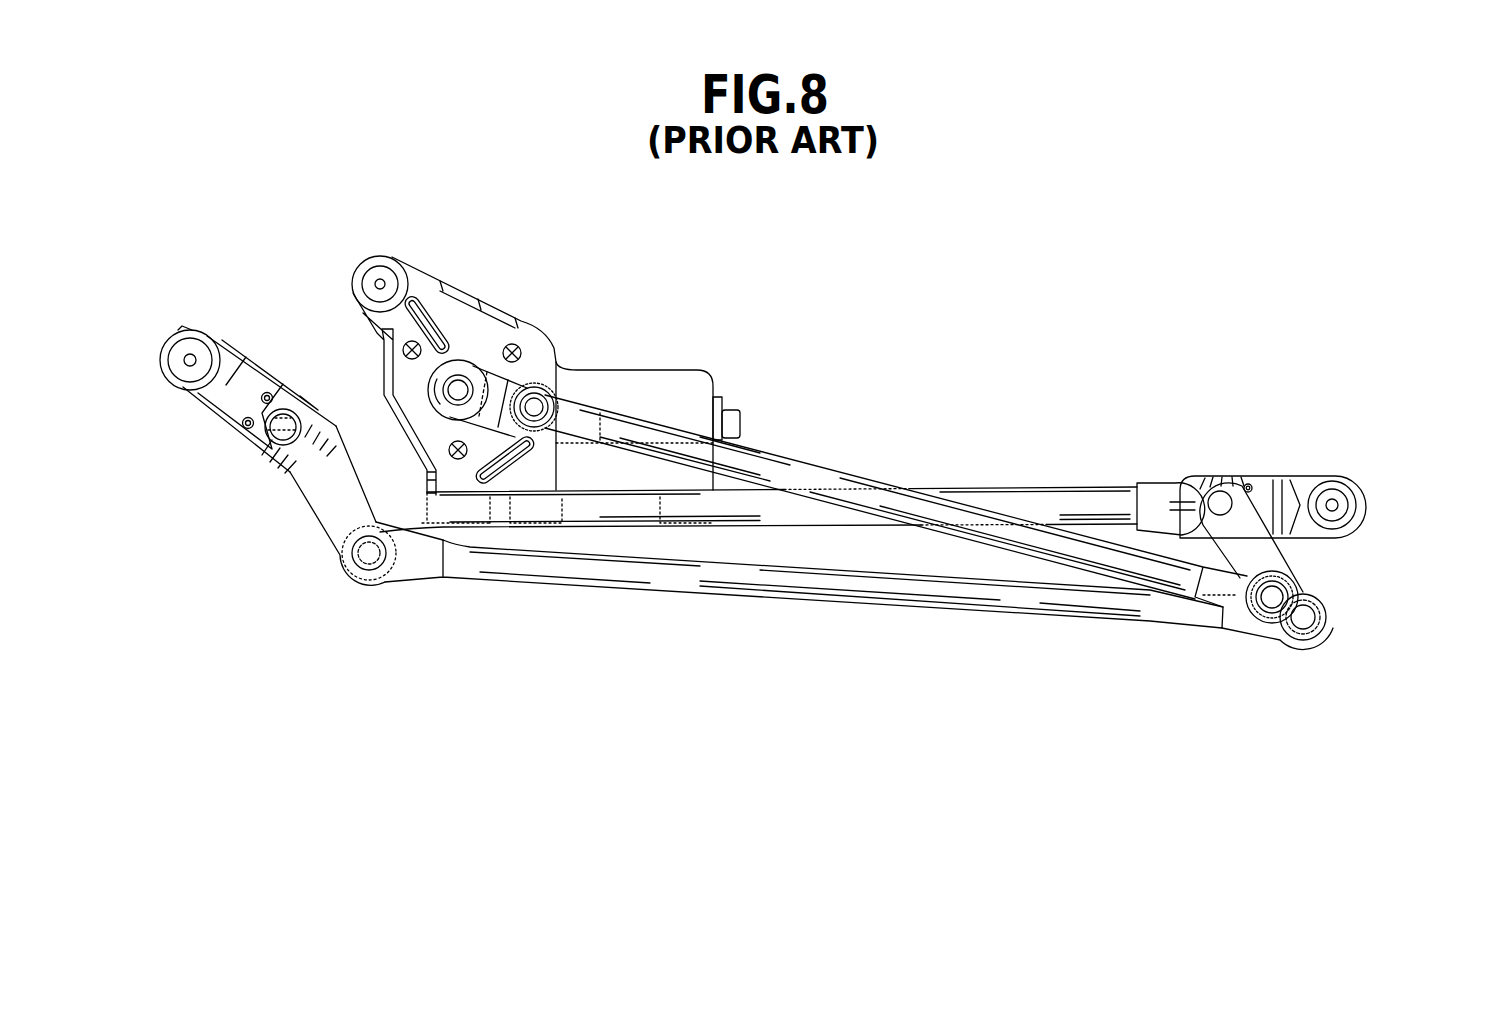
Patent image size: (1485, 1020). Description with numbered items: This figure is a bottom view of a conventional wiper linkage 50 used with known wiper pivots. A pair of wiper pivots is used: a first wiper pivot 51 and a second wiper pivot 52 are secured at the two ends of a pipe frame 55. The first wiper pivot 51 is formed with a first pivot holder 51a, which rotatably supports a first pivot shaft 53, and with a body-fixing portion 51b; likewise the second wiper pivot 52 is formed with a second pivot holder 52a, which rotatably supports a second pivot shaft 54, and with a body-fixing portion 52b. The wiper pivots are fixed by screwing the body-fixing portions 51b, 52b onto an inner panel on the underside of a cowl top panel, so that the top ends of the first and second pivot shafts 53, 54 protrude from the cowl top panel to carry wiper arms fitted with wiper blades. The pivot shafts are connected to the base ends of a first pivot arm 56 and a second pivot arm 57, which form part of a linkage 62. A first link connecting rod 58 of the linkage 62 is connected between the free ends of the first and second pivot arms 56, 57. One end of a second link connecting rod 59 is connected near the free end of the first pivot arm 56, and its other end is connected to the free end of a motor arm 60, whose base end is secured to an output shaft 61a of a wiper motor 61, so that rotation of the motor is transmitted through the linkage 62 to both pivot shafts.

The wiper linkage 50 is at (968, 353).
The first wiper pivot 51 is at (1205, 473).
The first pivot holder 51a is at (1187, 478).
The body-fixing portion 51b is at (1350, 538).
The second wiper pivot 52 is at (237, 440).
The second pivot holder 52a is at (288, 410).
The body-fixing portion 52b is at (182, 392).
The first pivot shaft 53 is at (1236, 497).
The second pivot shaft 54 is at (283, 445).
The pipe frame 55 is at (1032, 488).
The first pivot arm 56 is at (1313, 587).
The second pivot arm 57 is at (327, 530).
The first link connecting rod 58 is at (860, 604).
The second link connecting rod 59 is at (847, 472).
The motor arm 60 is at (474, 368).
The wiper motor 61 is at (643, 370).
The output shaft 61a is at (460, 386).
The linkage 62 is at (775, 449).